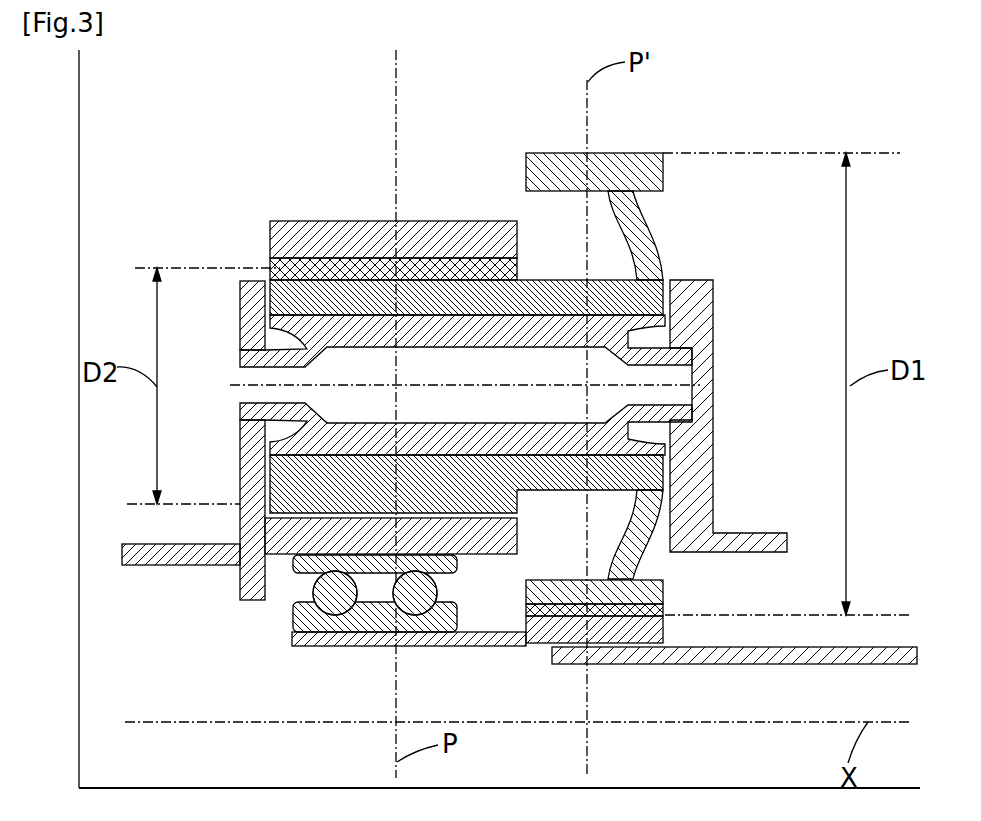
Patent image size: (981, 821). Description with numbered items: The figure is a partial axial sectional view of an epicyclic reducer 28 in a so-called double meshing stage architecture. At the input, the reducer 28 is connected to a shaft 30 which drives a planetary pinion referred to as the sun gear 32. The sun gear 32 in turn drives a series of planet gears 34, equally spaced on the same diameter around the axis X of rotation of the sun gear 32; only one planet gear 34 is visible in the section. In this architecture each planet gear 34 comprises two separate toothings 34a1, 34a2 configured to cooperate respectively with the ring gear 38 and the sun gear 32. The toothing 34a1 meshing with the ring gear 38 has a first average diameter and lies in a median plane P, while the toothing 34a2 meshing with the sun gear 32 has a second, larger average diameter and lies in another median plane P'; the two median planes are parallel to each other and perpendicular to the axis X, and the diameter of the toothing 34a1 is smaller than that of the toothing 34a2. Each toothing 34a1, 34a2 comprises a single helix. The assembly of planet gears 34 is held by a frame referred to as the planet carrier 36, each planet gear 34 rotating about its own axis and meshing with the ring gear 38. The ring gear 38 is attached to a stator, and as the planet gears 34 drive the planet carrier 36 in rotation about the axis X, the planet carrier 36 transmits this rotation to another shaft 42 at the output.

The epicyclic reducer 28 is at (812, 88).
The shaft 30 is at (757, 667).
The sun gear 32 is at (537, 636).
The planet gear 34 is at (672, 213).
The toothing 34a1 is at (297, 513).
The toothing 34a2 is at (652, 152).
The planet carrier 36 is at (721, 315).
The ring gear 38 is at (358, 237).
The shaft 42 is at (142, 563).